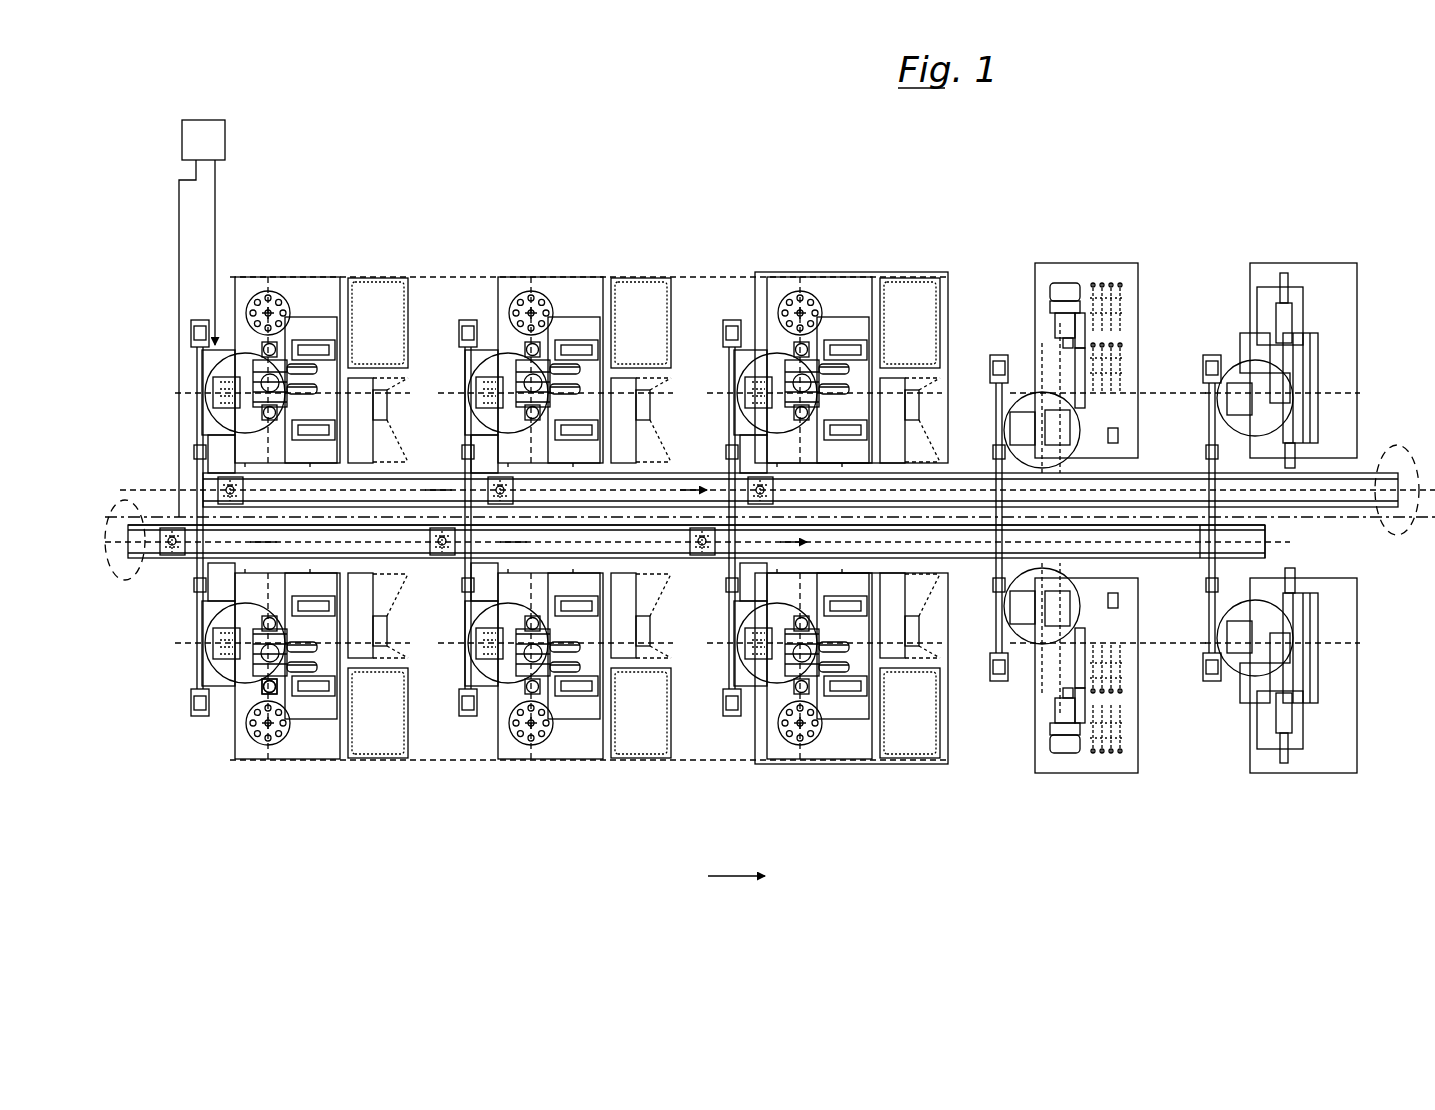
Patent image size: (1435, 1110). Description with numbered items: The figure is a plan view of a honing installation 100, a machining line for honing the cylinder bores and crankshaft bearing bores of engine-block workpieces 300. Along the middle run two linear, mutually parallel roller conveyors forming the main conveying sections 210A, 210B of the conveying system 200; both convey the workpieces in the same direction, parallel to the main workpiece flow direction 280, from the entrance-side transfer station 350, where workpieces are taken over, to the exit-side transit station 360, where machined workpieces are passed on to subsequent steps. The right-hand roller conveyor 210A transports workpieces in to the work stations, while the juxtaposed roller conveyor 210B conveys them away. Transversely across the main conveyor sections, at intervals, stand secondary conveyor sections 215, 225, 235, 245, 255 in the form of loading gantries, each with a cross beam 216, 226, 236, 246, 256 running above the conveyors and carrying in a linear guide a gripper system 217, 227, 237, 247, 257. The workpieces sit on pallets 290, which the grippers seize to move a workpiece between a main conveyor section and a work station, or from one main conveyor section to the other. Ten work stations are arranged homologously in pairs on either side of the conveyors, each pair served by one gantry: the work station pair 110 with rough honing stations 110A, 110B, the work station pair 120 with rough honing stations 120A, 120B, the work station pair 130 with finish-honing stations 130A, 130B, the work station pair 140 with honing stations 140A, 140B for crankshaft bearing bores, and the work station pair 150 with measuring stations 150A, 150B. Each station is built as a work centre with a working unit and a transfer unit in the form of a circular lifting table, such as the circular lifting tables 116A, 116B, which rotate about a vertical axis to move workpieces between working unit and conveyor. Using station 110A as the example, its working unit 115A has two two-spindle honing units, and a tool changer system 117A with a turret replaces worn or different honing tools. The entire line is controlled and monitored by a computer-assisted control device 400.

The honing installation 100 is at (722, 97).
The work station pair 110 is at (316, 78).
The rough honing station 110A is at (327, 745).
The rough honing station 110B is at (315, 285).
The working unit 115A is at (325, 648).
The circular lifting table 116A is at (232, 672).
The circular lifting table 116B is at (248, 365).
The tool changer system 117A is at (290, 745).
The work station pair 120 is at (598, 90).
The rough honing station 120A is at (585, 765).
The rough honing station 120B is at (585, 290).
The work station pair 130 is at (818, 100).
The finish-honing station 130A is at (835, 765).
The finish-honing station 130B is at (845, 290).
The work station pair 140 is at (1100, 96).
The honing station 140A is at (1095, 773).
The honing station 140B is at (1090, 275).
The work station pair 150 is at (1315, 106).
The measuring station 150A is at (1315, 773).
The measuring station 150B is at (1320, 270).
The conveying system 200 is at (1385, 432).
The main conveying section 210A is at (766, 592).
The main conveying section 210B is at (1343, 478).
The secondary conveyor section 215 is at (197, 716).
The cross beam 216 is at (200, 598).
The gripper system 217 is at (232, 468).
The secondary conveyor section 225 is at (468, 716).
The cross beam 226 is at (468, 592).
The gripper system 227 is at (462, 452).
The secondary conveyor section 235 is at (732, 716).
The cross beam 236 is at (728, 592).
The gripper system 237 is at (726, 448).
The secondary conveyor section 245 is at (996, 683).
The cross beam 246 is at (1000, 590).
The gripper system 247 is at (1005, 440).
The secondary conveyor section 255 is at (1212, 683).
The cross beam 256 is at (1208, 595).
The gripper system 257 is at (1207, 442).
The main workpiece flow direction 280 is at (713, 878).
The pallet 290 is at (442, 565).
The workpiece 300 is at (696, 544).
The entrance-side transfer station 350 is at (128, 510).
The exit-side transit station 360 is at (1330, 550).
The control device 400 is at (225, 148).